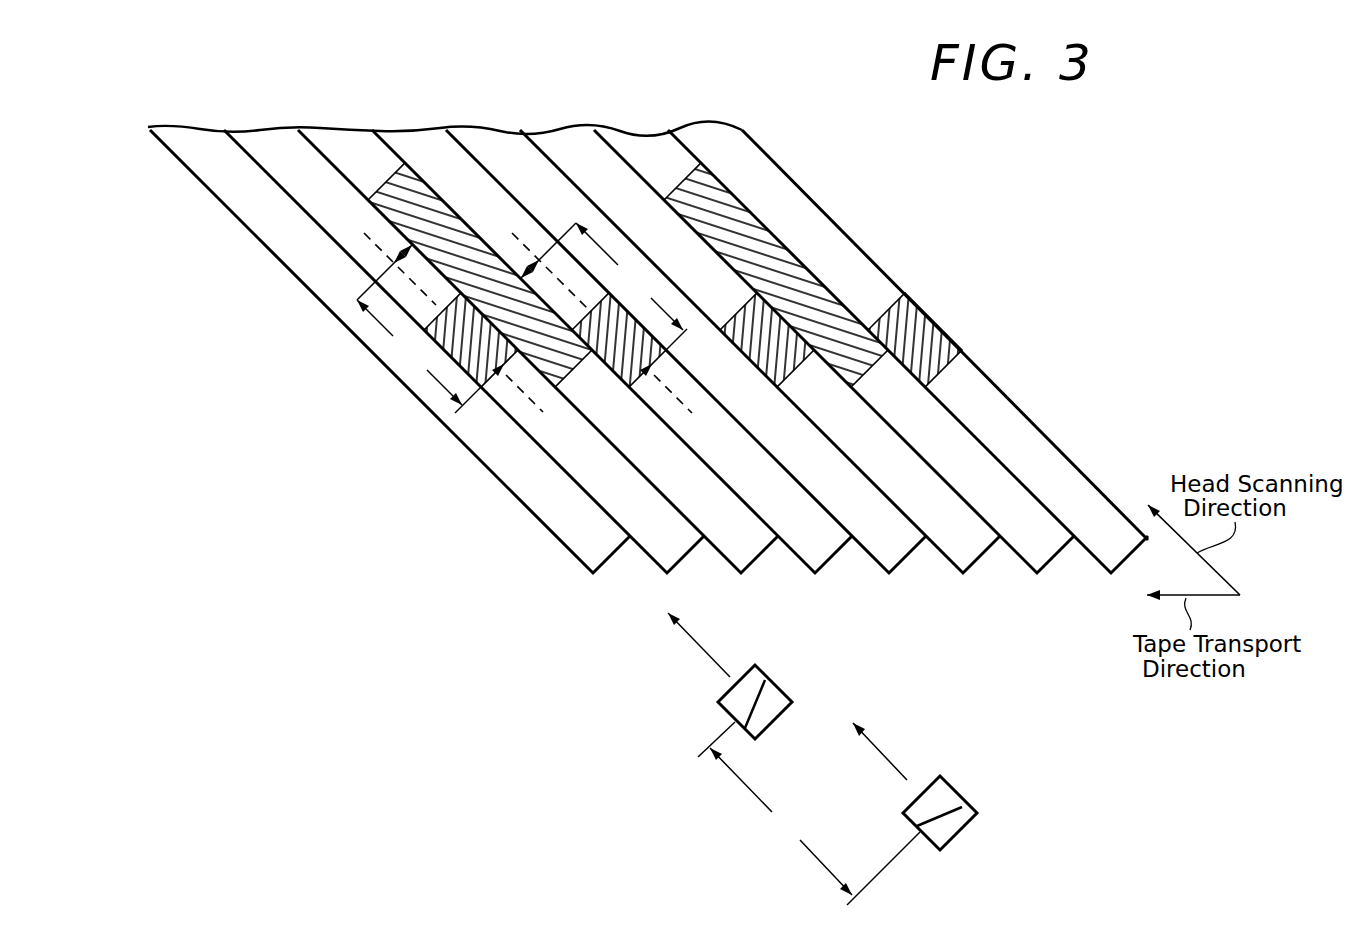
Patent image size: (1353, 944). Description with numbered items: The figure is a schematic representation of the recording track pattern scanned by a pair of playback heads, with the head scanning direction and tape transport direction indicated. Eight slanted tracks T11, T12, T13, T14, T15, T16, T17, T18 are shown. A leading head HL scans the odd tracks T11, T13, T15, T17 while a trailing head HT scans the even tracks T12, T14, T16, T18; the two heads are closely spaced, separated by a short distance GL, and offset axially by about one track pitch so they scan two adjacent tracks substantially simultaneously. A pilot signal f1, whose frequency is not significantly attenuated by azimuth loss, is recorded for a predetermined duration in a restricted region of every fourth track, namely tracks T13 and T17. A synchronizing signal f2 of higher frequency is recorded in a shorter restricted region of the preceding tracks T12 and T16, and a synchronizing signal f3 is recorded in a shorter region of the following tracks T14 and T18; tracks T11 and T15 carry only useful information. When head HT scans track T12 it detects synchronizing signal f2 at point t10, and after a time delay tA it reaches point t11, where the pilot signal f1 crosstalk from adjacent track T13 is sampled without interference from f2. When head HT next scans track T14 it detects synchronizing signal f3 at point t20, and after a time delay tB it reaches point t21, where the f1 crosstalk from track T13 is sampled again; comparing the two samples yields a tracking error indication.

The track T11 is at (192, 135).
The track T12 is at (272, 136).
The track T13 is at (338, 135).
The track T14 is at (410, 135).
The track T15 is at (484, 135).
The track T16 is at (558, 135).
The track T17 is at (632, 135).
The track T18 is at (708, 135).
The pilot signal f1 is at (628, 275).
The synchronizing signal f2 is at (619, 340).
The synchronizing signal f3 is at (767, 340).
The time delay tA is at (419, 329).
The time delay tB is at (604, 286).
The point t11 is at (391, 263).
The point t10 is at (500, 373).
The point t21 is at (536, 262).
The point t20 is at (648, 373).
The leading head HL is at (782, 718).
The trailing head HT is at (966, 830).
The distance GL is at (809, 813).